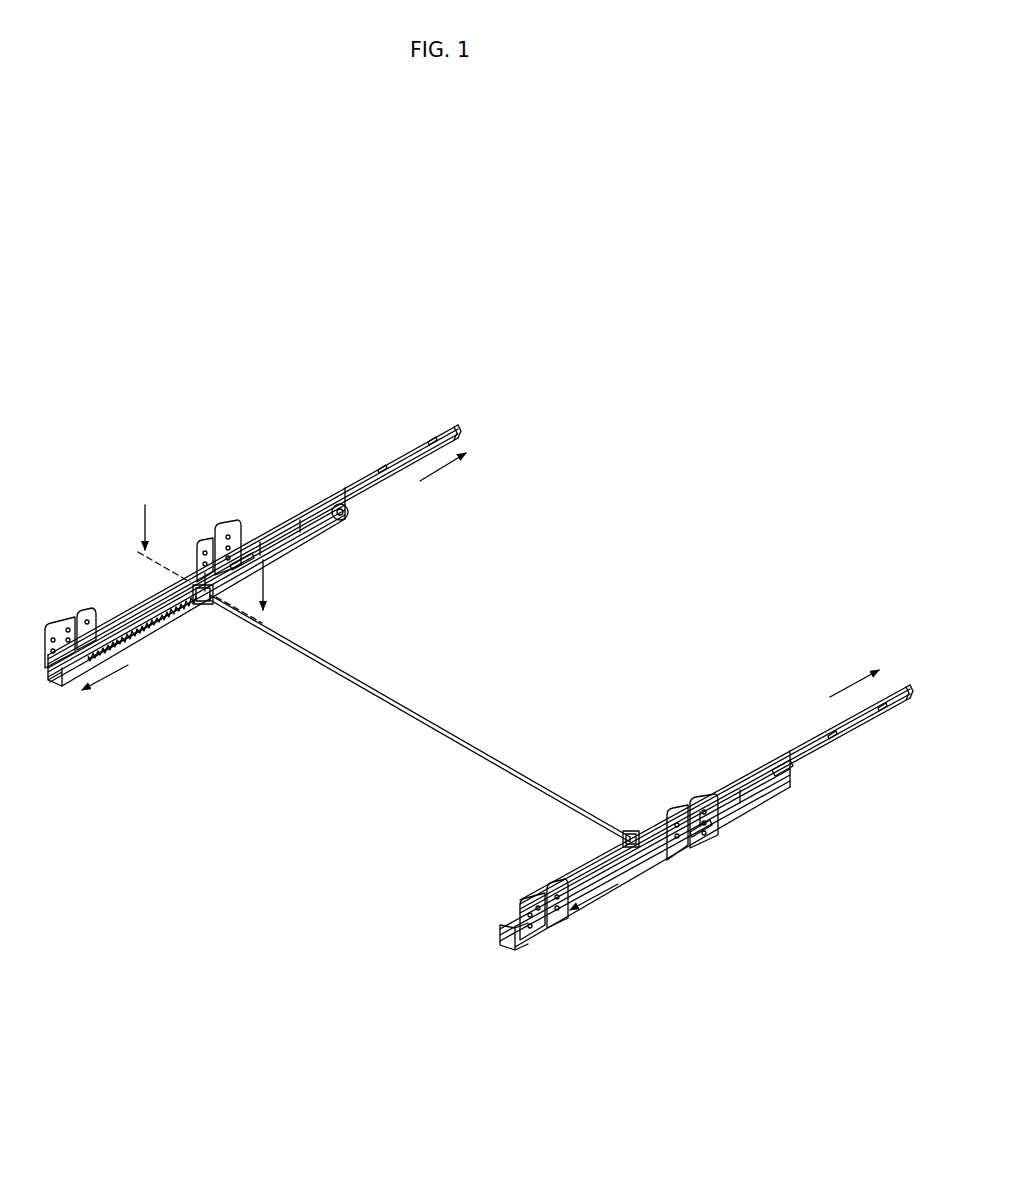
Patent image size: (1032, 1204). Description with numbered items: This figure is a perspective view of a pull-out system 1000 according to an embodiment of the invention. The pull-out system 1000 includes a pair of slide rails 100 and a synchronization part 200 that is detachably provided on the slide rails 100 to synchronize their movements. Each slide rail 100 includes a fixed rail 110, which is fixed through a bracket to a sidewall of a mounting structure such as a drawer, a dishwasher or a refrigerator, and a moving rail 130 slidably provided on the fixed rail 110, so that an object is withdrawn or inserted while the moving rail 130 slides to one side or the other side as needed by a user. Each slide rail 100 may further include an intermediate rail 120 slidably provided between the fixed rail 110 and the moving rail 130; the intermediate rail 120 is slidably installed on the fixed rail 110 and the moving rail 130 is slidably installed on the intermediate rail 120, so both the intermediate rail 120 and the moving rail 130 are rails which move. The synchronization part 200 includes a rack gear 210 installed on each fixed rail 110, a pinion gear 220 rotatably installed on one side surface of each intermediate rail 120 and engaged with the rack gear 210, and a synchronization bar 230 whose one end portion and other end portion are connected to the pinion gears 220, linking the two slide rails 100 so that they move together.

The pull-out system 1000 is at (104, 374).
The slide rail 100 is at (388, 405).
The fixed rail 110 is at (635, 873).
The intermediate rail 120 is at (160, 596).
The moving rail 130 is at (340, 490).
The synchronization part 200 is at (214, 626).
The rack gear 210 is at (135, 657).
The pinion gear 220 is at (203, 542).
The synchronization bar 230 is at (425, 717).